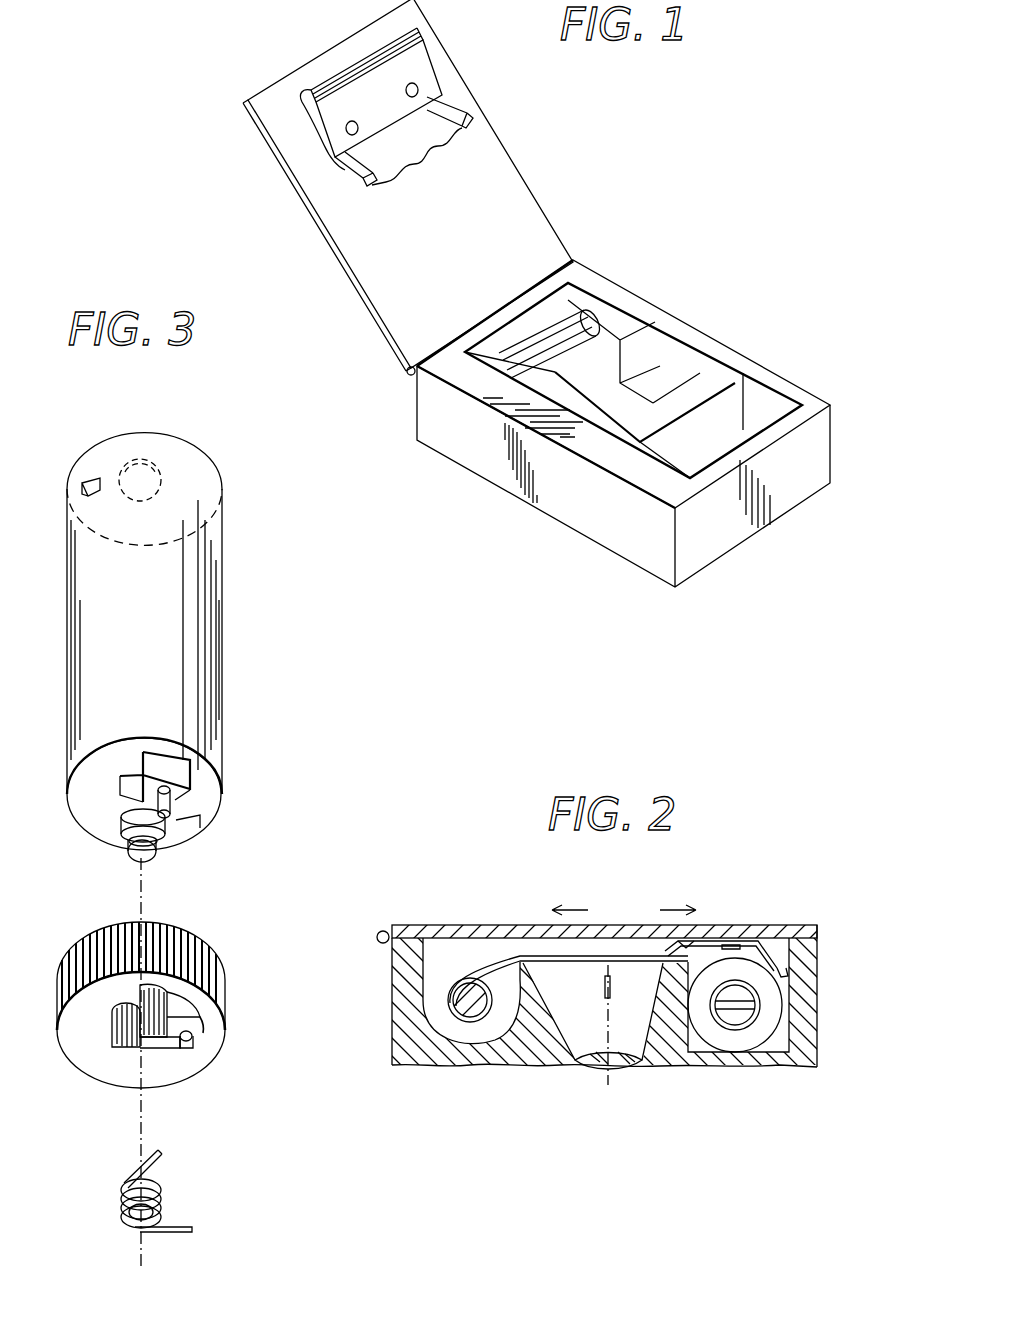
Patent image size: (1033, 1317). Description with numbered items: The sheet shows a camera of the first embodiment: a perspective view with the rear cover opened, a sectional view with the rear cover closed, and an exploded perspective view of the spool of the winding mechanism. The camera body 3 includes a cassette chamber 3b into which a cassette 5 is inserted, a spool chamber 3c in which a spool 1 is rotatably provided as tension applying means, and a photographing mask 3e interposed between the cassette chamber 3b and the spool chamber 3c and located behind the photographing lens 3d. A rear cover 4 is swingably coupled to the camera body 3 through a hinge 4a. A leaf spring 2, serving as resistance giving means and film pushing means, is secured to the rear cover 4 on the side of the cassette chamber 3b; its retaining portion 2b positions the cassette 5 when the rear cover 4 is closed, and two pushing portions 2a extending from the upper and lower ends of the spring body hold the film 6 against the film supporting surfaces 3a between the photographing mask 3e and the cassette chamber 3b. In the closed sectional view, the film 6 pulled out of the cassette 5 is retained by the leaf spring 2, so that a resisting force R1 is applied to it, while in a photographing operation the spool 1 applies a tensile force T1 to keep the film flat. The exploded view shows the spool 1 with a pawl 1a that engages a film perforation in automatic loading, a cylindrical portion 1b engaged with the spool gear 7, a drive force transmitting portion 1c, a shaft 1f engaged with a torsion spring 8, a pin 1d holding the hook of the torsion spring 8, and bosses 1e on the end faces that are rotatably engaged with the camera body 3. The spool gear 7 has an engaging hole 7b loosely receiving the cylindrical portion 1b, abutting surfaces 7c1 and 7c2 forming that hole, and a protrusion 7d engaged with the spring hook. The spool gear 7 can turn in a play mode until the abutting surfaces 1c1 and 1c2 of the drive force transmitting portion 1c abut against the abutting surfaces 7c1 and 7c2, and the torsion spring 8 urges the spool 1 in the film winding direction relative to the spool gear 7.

In FIG. 1, the spool 1 is at (592, 318).
In FIG. 3, the spool 1 is at (190, 652).
In FIG. 2, the spool 1 is at (473, 987).
In FIG. 3, the pawl 1a is at (89, 481).
In FIG. 3, the cylindrical portion 1b is at (120, 800).
In FIG. 3, the drive force transmitting portion 1c is at (176, 766).
In FIG. 3, the abutting surface 1c1 is at (172, 800).
In FIG. 3, the abutting surface 1c2 is at (142, 760).
In FIG. 3, the pin 1d is at (165, 828).
In FIG. 3, the boss 1e is at (150, 458).
In FIG. 3, the shaft 1f is at (178, 834).
In FIG. 1, the leaf spring 2 is at (427, 82).
In FIG. 2, the leaf spring 2 is at (753, 940).
In FIG. 1, the pushing portion 2a is at (404, 146).
In FIG. 2, the pushing portion 2a is at (707, 943).
In FIG. 1, the retaining portion 2b is at (419, 32).
In FIG. 2, the retaining portion 2b is at (780, 978).
In FIG. 1, the camera body 3 is at (452, 440).
In FIG. 2, the camera body 3 is at (601, 995).
In FIG. 1, the film supporting surface 3a is at (708, 373).
In FIG. 2, the film supporting surface 3a is at (670, 1017).
In FIG. 1, the cassette chamber 3b is at (757, 397).
In FIG. 2, the cassette chamber 3b is at (777, 1037).
In FIG. 1, the spool chamber 3c is at (552, 305).
In FIG. 2, the spool chamber 3c is at (440, 1013).
In FIG. 2, the photographing lens 3d is at (587, 1073).
In FIG. 1, the photographing mask 3e is at (613, 370).
In FIG. 2, the photographing mask 3e is at (552, 972).
In FIG. 1, the rear cover 4 is at (380, 293).
In FIG. 2, the rear cover 4 is at (538, 925).
In FIG. 1, the hinge 4a is at (406, 373).
In FIG. 2, the hinge 4a is at (381, 930).
In FIG. 2, the cassette 5 is at (745, 1042).
In FIG. 2, the film 6 is at (617, 956).
In FIG. 3, the spool gear 7 is at (222, 975).
In FIG. 3, the engaging hole 7b is at (118, 1045).
In FIG. 3, the abutting surface 7c1 is at (183, 1008).
In FIG. 3, the abutting surface 7c2 is at (154, 985).
In FIG. 3, the protrusion 7d is at (188, 1042).
In FIG. 3, the torsion spring 8 is at (180, 1227).
In FIG. 2, the tensile force T1 is at (570, 897).
In FIG. 2, the resisting force R1 is at (678, 898).